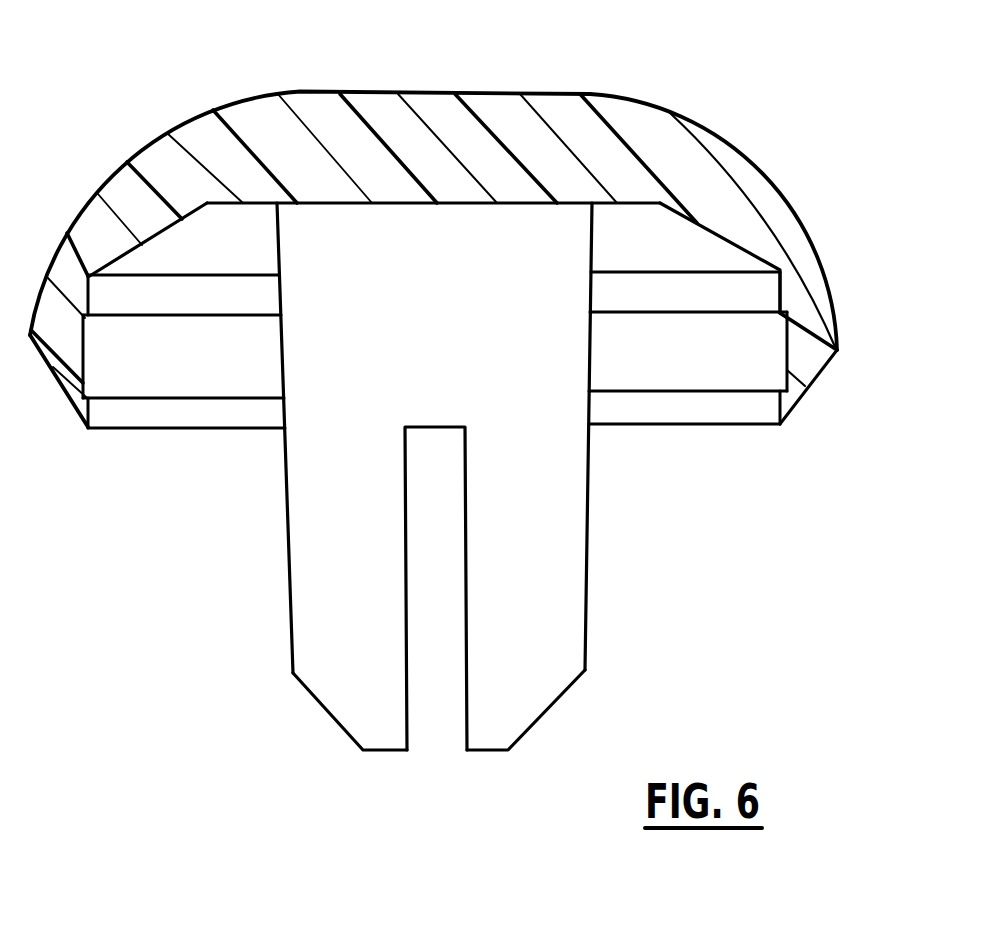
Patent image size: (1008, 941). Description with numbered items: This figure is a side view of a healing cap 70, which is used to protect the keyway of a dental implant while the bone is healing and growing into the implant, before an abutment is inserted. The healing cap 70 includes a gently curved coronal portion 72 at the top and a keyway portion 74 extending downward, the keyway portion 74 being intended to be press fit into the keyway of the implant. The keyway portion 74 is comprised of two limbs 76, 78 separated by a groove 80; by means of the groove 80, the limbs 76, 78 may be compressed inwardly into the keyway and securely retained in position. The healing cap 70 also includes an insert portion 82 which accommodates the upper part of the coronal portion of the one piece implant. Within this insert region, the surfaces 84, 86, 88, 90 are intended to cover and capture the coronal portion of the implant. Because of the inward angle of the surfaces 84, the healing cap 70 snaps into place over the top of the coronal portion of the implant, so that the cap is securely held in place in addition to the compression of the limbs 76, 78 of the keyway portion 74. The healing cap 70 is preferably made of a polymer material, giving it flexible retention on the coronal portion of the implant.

The healing cap 70 is at (796, 164).
The coronal portion 72 is at (566, 95).
The keyway portion 74 is at (291, 618).
The limb 76 is at (367, 657).
The limb 78 is at (546, 657).
The groove 80 is at (430, 711).
The insert portion 82 is at (684, 217).
The surface 84 is at (88, 397).
The surface 86 is at (86, 318).
The surface 88 is at (175, 222).
The surface 90 is at (453, 205).